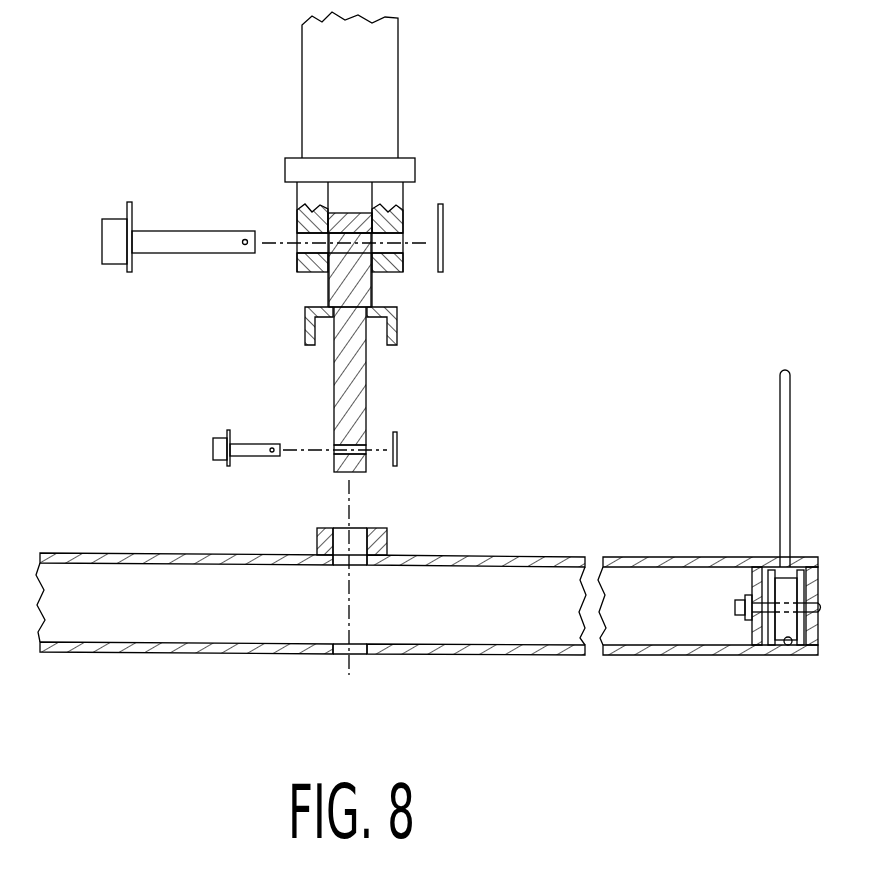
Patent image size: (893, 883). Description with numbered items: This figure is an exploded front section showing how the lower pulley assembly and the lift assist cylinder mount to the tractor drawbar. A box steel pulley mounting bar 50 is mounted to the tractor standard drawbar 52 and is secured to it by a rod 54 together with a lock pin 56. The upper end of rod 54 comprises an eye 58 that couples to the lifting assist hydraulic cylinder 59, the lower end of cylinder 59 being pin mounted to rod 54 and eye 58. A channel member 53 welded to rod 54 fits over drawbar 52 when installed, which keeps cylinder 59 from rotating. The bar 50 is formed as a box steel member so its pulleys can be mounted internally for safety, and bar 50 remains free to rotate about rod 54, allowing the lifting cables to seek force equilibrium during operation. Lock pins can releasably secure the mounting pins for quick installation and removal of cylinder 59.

The box steel pulley mounting bar 50 is at (248, 553).
The tractor standard drawbar 52 is at (382, 543).
The channel member 53 is at (398, 325).
The rod 54 is at (366, 392).
The lock pin 56 is at (248, 440).
The eye 58 is at (347, 264).
The lifting assist hydraulic cylinder 59 is at (398, 118).